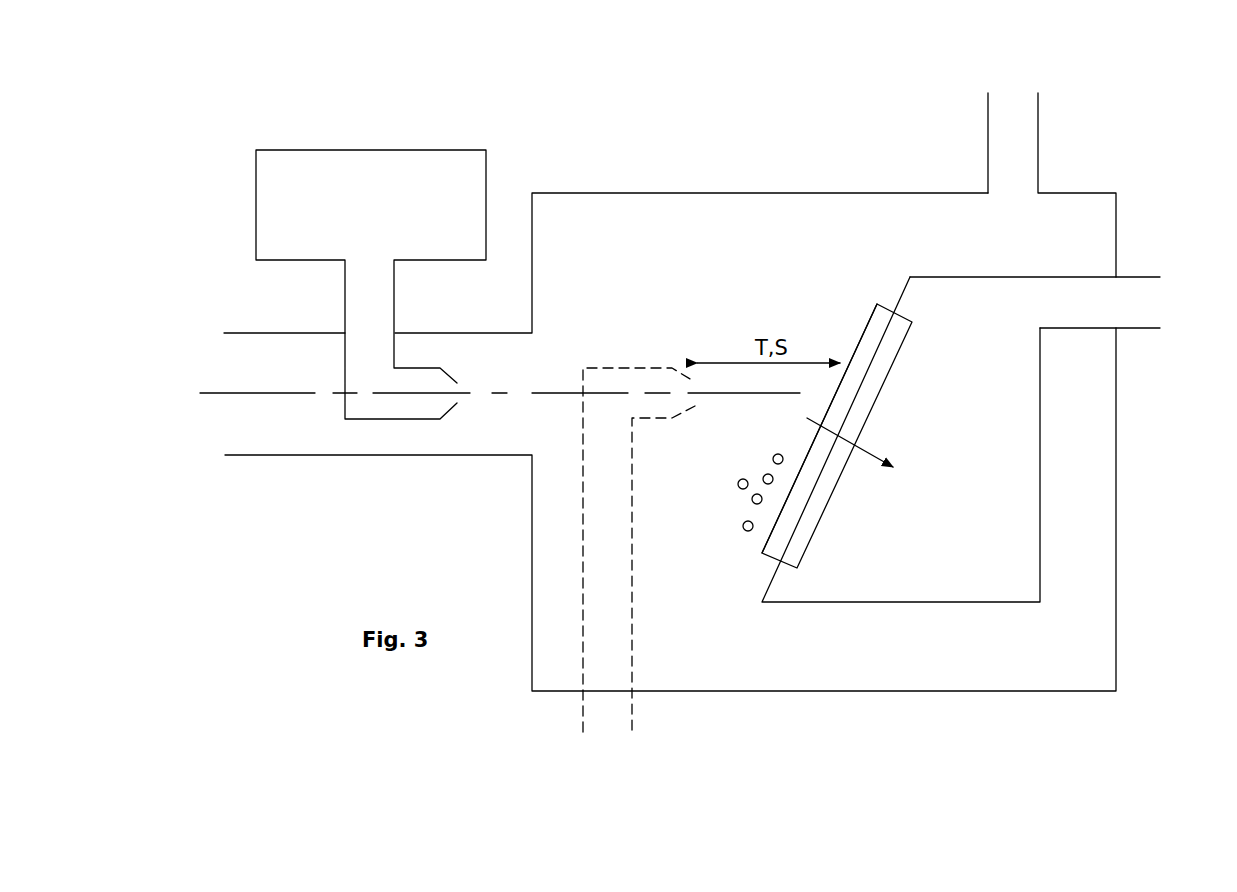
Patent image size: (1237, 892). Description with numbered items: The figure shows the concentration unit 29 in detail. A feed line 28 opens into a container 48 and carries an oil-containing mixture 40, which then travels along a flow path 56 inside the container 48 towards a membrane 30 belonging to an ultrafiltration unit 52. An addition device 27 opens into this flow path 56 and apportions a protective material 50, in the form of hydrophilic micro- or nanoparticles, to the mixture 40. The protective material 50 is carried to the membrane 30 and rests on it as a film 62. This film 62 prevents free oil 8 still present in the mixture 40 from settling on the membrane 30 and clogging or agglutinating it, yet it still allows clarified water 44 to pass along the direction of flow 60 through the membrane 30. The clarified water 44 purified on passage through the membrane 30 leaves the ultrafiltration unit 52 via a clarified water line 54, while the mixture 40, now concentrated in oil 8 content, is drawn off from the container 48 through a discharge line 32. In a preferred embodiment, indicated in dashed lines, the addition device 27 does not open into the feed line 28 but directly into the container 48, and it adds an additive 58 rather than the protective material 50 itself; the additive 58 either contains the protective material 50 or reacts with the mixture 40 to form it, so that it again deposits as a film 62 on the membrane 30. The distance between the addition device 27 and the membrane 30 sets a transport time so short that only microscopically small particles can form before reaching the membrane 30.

The addition device 27 is at (392, 123).
The protective material 50 is at (275, 210).
The container 48 is at (625, 258).
The flow path 56 is at (695, 323).
The discharge line 32 is at (1038, 145).
The clarified water line 54 is at (1135, 277).
The ultrafiltration unit 52 is at (1022, 545).
The clarified water 44 is at (956, 493).
The mixture 40 is at (277, 421).
The feed line 28 is at (335, 458).
The additive 58 is at (619, 658).
The concentration unit 29 is at (535, 733).
The free oil 8 is at (763, 478).
The direction of flow 60 is at (873, 437).
The film 62 is at (800, 498).
The membrane 30 is at (800, 543).